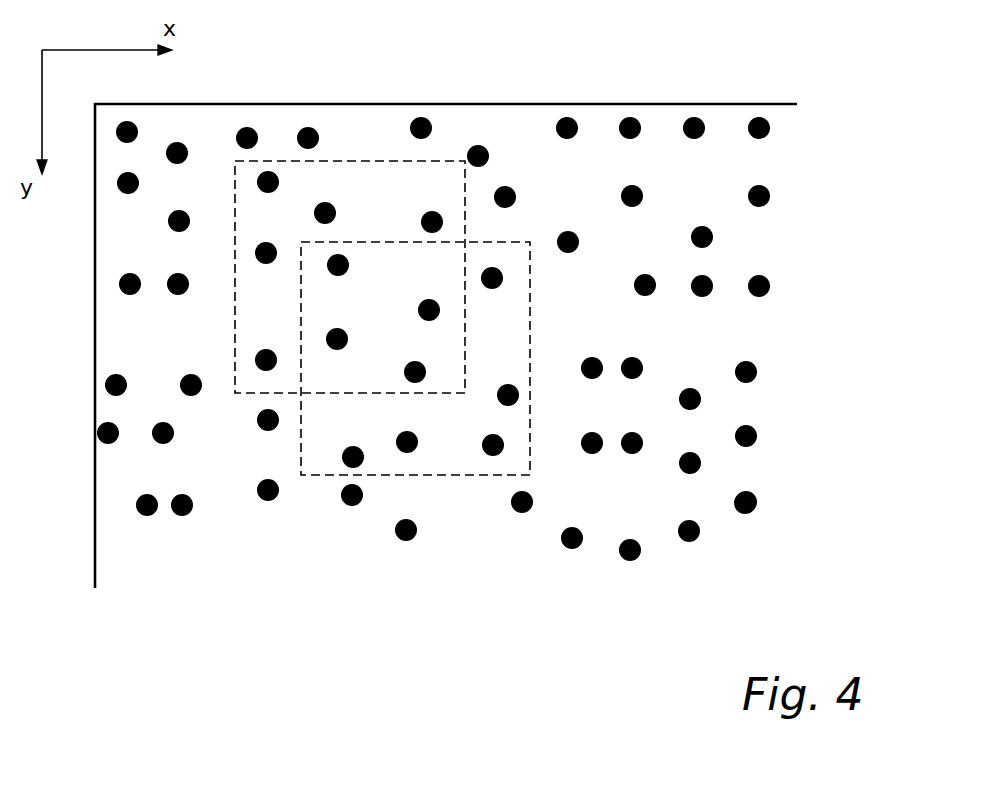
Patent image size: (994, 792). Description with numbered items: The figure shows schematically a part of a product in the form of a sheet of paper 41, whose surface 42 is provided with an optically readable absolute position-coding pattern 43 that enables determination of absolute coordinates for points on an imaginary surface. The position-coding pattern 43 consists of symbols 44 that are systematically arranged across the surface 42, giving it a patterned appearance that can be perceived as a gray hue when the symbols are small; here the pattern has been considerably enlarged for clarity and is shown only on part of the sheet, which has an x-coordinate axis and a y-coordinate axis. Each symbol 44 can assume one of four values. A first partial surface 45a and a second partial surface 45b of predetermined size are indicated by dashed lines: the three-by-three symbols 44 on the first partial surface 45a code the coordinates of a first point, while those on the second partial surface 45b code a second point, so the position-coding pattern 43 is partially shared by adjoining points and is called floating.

The sheet of paper 41 is at (668, 98).
The surface 42 is at (229, 590).
The position-coding pattern 43 is at (805, 360).
The symbols 44 is at (650, 573).
The first partial surface 45a is at (372, 160).
The second partial surface 45b is at (515, 255).